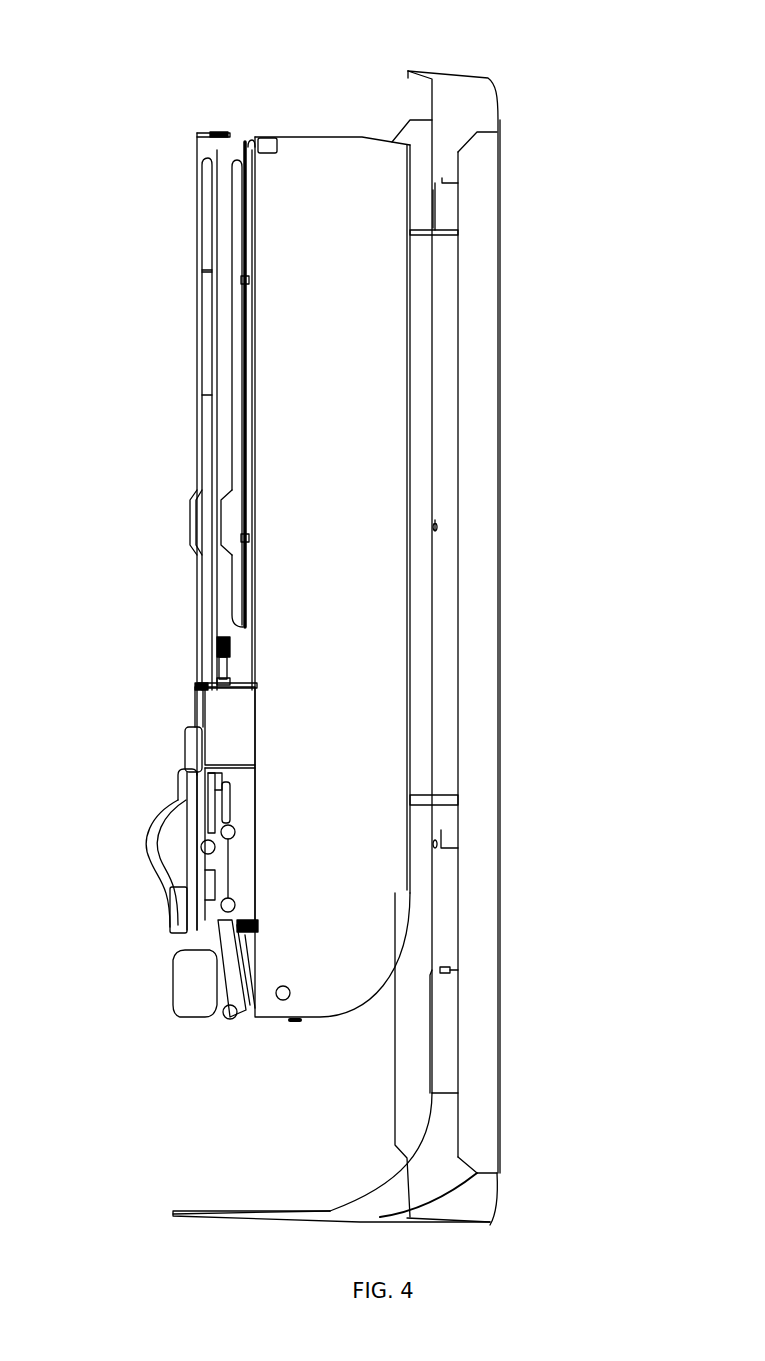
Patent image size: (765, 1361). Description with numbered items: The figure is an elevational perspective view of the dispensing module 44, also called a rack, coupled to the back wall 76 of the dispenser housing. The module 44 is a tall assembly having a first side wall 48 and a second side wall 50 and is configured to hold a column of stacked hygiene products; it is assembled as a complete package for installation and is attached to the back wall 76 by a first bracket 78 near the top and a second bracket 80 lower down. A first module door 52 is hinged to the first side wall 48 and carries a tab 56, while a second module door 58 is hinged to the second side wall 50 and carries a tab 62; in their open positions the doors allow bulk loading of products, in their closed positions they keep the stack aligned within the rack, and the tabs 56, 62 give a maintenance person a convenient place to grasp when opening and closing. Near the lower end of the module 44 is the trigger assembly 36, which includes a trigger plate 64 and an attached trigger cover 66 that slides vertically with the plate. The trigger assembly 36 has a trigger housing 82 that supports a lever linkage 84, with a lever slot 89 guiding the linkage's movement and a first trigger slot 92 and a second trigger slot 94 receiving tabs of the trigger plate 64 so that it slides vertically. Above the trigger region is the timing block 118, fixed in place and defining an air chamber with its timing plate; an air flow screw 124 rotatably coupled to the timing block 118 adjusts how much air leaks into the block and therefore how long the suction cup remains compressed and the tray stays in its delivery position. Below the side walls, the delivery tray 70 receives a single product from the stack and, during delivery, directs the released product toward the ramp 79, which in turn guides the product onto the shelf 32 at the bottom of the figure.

The shelf 32 is at (290, 1204).
The trigger assembly 36 is at (163, 795).
The dispensing module 44 is at (257, 98).
The first side wall 48 is at (229, 155).
The second side wall 50 is at (320, 158).
The first module door 52 is at (207, 257).
The tab 56 is at (200, 522).
The second module door 58 is at (235, 445).
The tab 62 is at (233, 520).
The trigger plate 64 is at (190, 750).
The trigger cover 66 is at (152, 835).
The delivery tray 70 is at (187, 990).
The back wall 76 is at (478, 112).
The first bracket 78 is at (436, 238).
The ramp 79 is at (404, 1181).
The second bracket 80 is at (436, 800).
The trigger housing 82 is at (238, 798).
The lever linkage 84 is at (255, 928).
The lever slot 89 is at (233, 846).
The first trigger slot 92 is at (207, 808).
The second trigger slot 94 is at (207, 903).
The timing block 118 is at (200, 682).
The air flow screw 124 is at (228, 650).